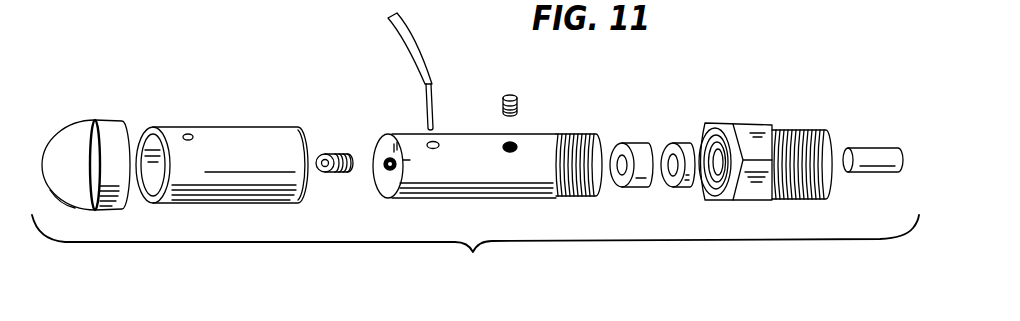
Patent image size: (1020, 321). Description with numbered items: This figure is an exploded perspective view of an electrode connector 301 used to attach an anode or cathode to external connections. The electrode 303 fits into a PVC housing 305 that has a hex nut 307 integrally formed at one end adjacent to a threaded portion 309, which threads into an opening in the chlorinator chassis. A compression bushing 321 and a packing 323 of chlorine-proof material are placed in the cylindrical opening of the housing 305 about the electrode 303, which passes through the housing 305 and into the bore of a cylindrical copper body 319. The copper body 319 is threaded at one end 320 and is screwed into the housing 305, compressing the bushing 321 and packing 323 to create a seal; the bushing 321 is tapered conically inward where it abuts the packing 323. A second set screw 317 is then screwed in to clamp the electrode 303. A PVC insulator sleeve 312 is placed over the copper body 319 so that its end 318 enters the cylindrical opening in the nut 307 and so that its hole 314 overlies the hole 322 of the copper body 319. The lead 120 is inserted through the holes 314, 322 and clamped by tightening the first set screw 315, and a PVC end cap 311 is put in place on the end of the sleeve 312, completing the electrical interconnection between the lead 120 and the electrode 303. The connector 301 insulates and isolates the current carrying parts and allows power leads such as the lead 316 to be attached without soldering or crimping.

The lead 120 is at (423, 40).
The electrode connector 301 is at (475, 248).
The electrode 303 is at (875, 150).
The PVC housing 305 is at (773, 128).
The hex nut 307 is at (743, 124).
The threaded portion 309 is at (783, 118).
The PVC end cap 311 is at (85, 118).
The PVC insulator sleeve 312 is at (218, 130).
The hole 314 is at (186, 136).
The first set screw 315 is at (343, 153).
The power lead 316 is at (434, 93).
The second set screw 317 is at (519, 100).
The end of insulator sleeve 318 is at (305, 147).
The cylindrical copper body 319 is at (413, 132).
The threaded end 320 is at (568, 132).
The compression bushing 321 is at (628, 141).
The hole 322 is at (436, 141).
The packing 323 is at (680, 141).